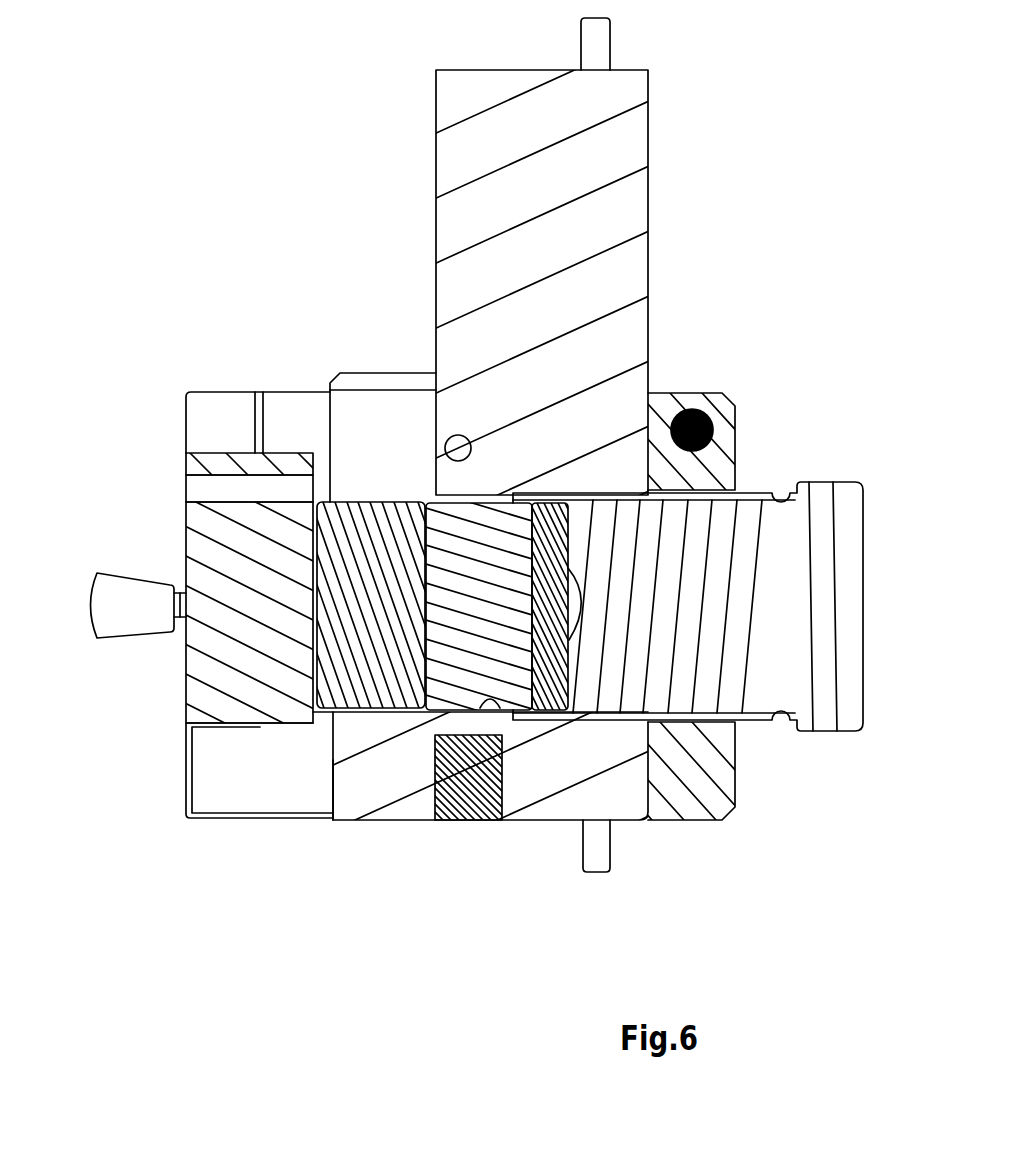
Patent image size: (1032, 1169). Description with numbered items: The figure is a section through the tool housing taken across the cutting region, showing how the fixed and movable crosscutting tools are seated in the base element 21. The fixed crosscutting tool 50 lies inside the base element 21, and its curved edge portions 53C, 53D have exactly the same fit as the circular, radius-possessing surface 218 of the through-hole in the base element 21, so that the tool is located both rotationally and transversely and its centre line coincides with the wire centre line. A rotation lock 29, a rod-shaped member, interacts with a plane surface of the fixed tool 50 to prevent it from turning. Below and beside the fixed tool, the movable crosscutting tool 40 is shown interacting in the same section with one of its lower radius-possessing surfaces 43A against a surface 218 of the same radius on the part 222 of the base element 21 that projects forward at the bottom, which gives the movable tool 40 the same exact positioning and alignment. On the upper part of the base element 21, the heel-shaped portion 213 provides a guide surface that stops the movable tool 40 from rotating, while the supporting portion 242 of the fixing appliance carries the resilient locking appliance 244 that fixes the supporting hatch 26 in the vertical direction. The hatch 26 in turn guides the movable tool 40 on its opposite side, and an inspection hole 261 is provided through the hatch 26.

The base element 21 is at (633, 218).
The heel-shaped portion 213 is at (398, 428).
The supporting portion 242 is at (242, 428).
The inspection hole 261 is at (200, 495).
The supporting hatch 26 is at (203, 643).
The resilient locking appliance 244 is at (150, 605).
The movable crosscutting tool 40 is at (366, 592).
The fixed crosscutting tool 50 is at (476, 517).
The curved edge face 53C is at (502, 508).
The radius-possessing surface 218 is at (507, 720).
The forward projecting part 222 is at (372, 770).
The radius-possessing surface 43A is at (340, 822).
The rotation lock 29 is at (447, 822).
The curved edge face 53D is at (480, 708).